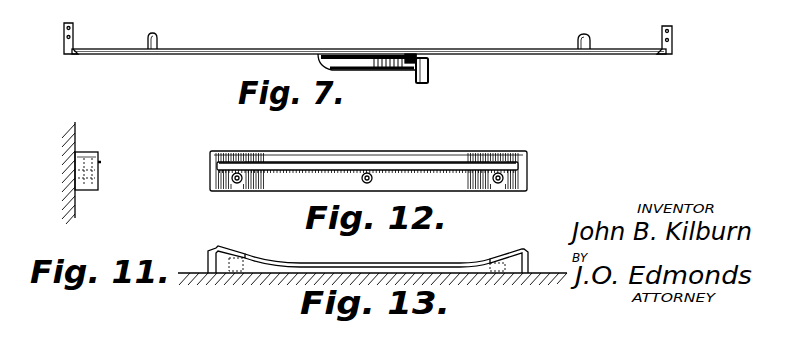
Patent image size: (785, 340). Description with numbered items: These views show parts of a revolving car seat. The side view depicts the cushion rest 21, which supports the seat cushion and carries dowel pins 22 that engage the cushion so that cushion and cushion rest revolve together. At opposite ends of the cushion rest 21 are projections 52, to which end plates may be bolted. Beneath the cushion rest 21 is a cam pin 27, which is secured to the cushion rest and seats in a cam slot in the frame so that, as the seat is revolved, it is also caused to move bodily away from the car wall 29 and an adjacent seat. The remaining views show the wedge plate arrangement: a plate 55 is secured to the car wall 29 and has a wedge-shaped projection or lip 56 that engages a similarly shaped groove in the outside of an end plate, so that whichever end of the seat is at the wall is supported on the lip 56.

In FIG. 7, the cushion rest 21 is at (290, 49).
In FIG. 7, the dowel pins 22 is at (157, 41).
In FIG. 7, the cam pin 27 is at (430, 76).
In FIG. 11, the car wall 29 is at (78, 140).
In FIG. 13, the car wall 29 is at (288, 277).
In FIG. 7, the projections 52 is at (63, 39).
In FIG. 11, the plate 55 is at (96, 153).
In FIG. 12, the plate 55 is at (528, 178).
In FIG. 13, the plate 55 is at (465, 265).
In FIG. 11, the wedge-shaped projection or lip 56 is at (101, 162).
In FIG. 12, the wedge-shaped projection or lip 56 is at (364, 165).
In FIG. 13, the wedge-shaped projection or lip 56 is at (408, 263).